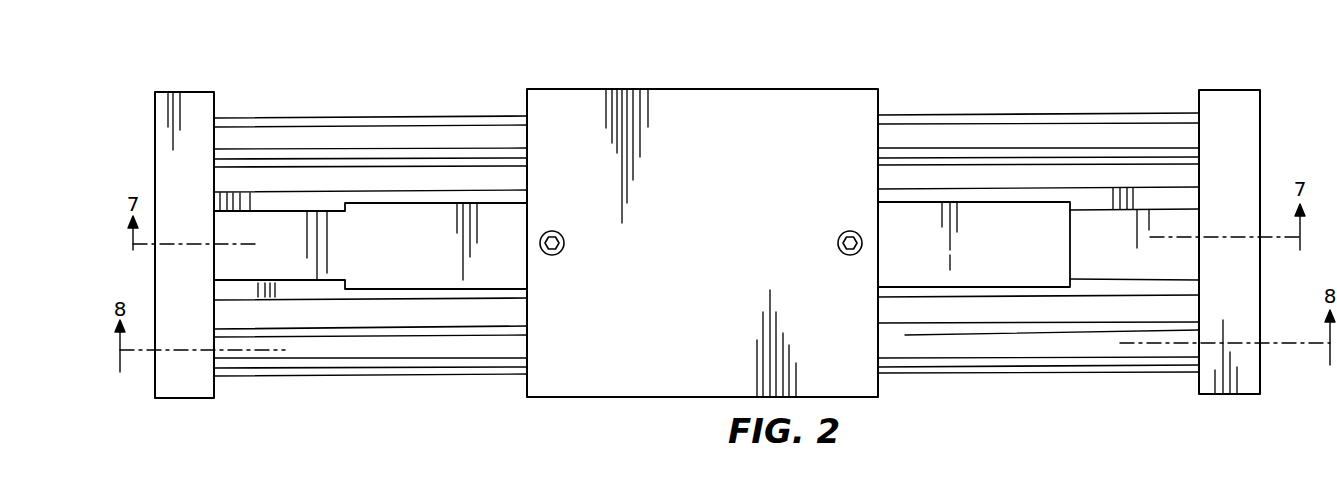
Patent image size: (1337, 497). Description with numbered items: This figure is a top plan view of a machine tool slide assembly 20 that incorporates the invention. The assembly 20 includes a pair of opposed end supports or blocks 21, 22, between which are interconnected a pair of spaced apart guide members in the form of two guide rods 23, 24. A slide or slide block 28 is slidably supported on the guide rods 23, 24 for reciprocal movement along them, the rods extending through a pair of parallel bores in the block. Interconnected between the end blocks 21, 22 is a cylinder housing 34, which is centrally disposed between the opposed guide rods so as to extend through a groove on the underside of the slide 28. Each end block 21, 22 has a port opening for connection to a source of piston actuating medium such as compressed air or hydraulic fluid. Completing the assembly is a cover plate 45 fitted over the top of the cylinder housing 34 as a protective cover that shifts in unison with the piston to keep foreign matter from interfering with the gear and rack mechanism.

The machine tool slide assembly 20 is at (863, 75).
The end support or block 21 is at (197, 128).
The end support or block 22 is at (1240, 127).
The guide rod 23 is at (1032, 367).
The guide rod 24 is at (1015, 127).
The slide or slide block 28 is at (682, 363).
The cylinder housing 34 is at (277, 228).
The cover plate 45 is at (1035, 255).